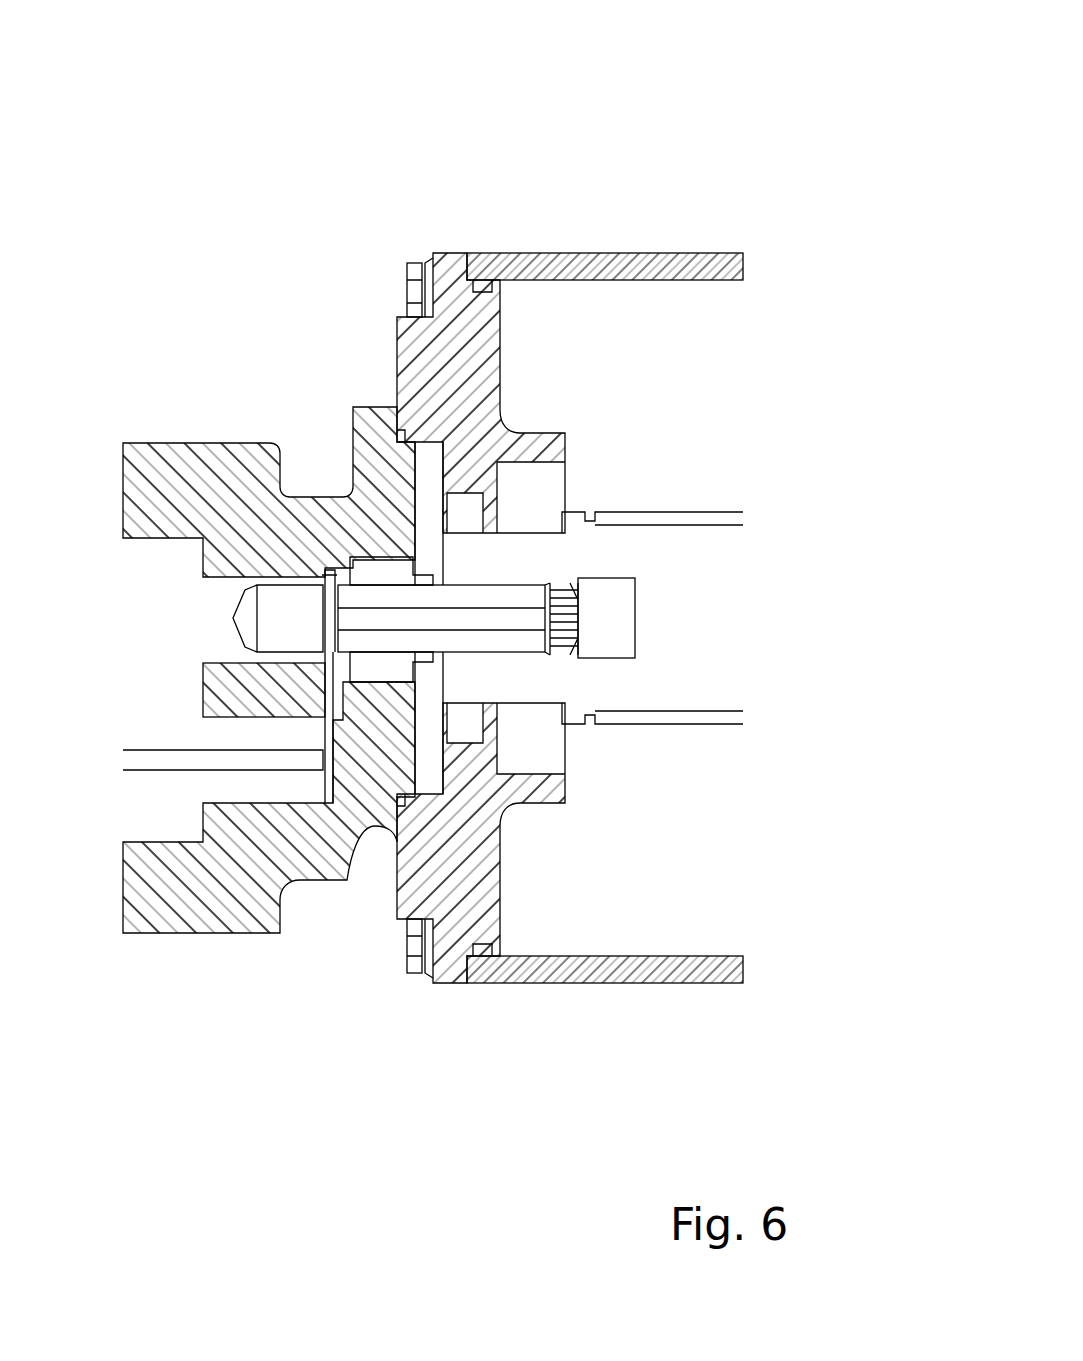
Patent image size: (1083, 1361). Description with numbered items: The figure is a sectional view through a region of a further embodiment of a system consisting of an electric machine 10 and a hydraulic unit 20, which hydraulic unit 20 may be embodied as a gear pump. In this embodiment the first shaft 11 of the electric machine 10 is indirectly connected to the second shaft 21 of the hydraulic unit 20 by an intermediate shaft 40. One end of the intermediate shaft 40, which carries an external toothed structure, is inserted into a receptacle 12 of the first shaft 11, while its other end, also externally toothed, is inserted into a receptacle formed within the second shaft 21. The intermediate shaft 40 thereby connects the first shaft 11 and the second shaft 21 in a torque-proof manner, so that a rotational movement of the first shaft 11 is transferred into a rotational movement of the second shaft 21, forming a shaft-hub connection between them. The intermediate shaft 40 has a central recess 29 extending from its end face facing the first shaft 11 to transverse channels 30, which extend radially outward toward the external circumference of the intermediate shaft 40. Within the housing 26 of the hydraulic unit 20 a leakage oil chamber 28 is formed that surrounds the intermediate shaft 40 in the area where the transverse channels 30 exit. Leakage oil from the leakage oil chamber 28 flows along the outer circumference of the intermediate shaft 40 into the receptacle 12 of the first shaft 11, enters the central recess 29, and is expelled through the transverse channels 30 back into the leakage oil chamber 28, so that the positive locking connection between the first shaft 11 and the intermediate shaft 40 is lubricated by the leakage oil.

The electric machine 10 is at (707, 142).
The first shaft 11 is at (727, 535).
The receptacle 12 is at (583, 658).
The hydraulic unit 20 is at (218, 172).
The second shaft 21 is at (170, 565).
The housing 26 is at (197, 923).
The leakage oil chamber 28 is at (333, 642).
The central recess 29 is at (472, 618).
The transverse channels 30 is at (331, 705).
The intermediate shaft 40 is at (477, 600).